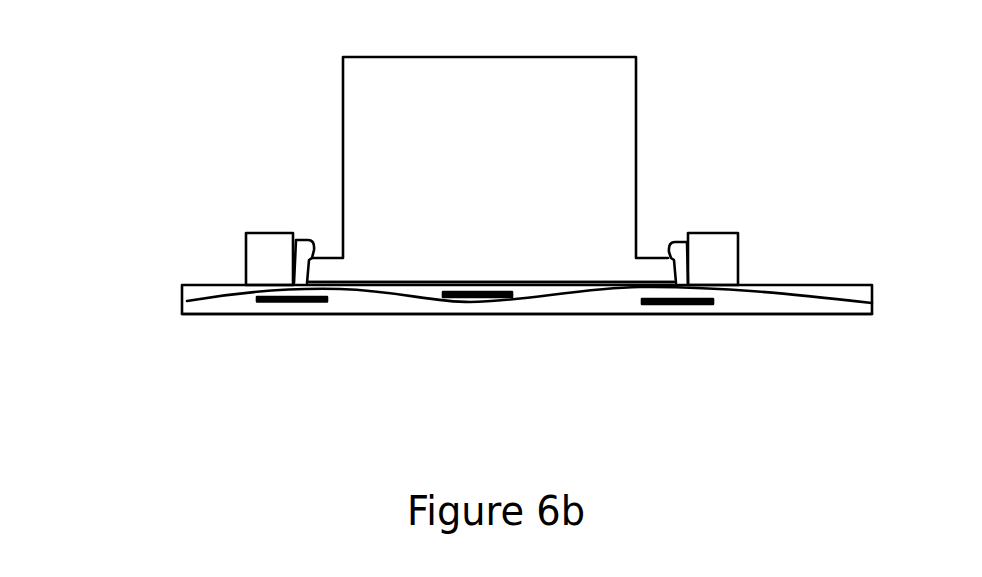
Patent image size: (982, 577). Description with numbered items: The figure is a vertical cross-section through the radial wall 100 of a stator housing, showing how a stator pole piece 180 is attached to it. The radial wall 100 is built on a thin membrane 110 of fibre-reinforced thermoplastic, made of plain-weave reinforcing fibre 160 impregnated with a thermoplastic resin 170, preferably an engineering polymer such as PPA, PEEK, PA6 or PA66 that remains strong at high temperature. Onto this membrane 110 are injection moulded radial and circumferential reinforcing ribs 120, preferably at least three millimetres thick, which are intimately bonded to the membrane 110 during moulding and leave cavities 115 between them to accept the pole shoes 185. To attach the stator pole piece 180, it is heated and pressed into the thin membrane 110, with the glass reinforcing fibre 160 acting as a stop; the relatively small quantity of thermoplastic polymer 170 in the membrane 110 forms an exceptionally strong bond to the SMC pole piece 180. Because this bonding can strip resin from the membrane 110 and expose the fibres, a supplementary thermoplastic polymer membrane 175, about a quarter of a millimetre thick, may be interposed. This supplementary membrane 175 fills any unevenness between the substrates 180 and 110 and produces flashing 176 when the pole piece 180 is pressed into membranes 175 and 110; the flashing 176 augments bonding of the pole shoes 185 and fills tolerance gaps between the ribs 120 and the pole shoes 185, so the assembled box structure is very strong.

The radial wall 100 is at (179, 353).
The thin membrane 110 is at (236, 314).
The cavities 115 is at (653, 240).
The reinforcing ribs 120 is at (727, 252).
The reinforcing fibre 160 is at (230, 285).
The thermoplastic resin 170 is at (745, 302).
The supplementary thermoplastic polymer membrane 175 is at (536, 283).
The flashing 176 is at (316, 240).
The stator pole piece 180 is at (430, 97).
The pole shoes 185 is at (655, 270).